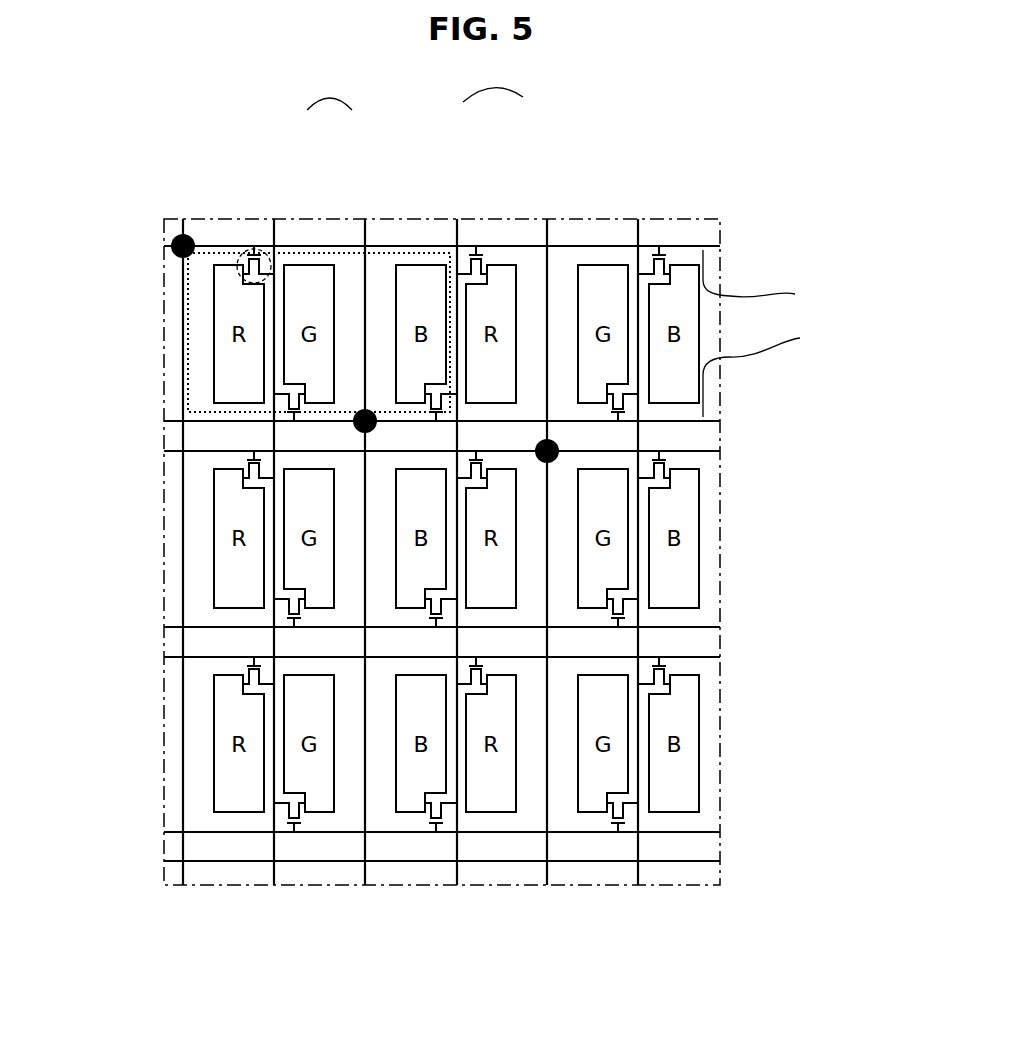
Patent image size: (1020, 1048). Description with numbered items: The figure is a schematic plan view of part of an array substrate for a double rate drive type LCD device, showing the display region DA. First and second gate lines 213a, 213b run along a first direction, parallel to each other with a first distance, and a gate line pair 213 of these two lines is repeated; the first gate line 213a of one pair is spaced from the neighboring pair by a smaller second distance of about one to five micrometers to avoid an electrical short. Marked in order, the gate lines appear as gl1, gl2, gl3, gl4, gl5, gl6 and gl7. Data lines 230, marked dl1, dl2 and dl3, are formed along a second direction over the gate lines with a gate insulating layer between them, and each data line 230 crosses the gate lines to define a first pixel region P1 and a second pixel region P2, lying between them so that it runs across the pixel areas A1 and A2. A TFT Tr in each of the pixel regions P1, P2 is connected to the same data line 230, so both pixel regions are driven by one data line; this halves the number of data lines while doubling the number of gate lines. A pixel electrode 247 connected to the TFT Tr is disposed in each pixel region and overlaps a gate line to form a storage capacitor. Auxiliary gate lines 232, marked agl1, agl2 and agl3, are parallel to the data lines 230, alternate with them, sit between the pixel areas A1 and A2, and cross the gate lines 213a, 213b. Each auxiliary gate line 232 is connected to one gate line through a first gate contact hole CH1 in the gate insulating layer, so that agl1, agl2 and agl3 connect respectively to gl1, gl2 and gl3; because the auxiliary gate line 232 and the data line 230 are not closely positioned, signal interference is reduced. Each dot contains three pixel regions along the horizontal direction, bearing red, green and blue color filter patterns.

The display region DA is at (733, 262).
The element dot is at (188, 380).
The first gate line gl1 is at (150, 246).
The second gate line gl2 is at (150, 421).
The third gate line gl3 is at (150, 451).
The fourth gate line gl4 is at (150, 627).
The fifth gate line gl5 is at (150, 657).
The sixth gate line gl6 is at (150, 832).
The seventh gate line gl7 is at (150, 861).
The auxiliary gate line 232 is at (371, 556).
The first auxiliary gate line agl1 is at (183, 905).
The second auxiliary gate line agl2 is at (365, 905).
The third auxiliary gate line agl3 is at (547, 905).
The data line 230 is at (486, 559).
The first data line dl1 is at (274, 905).
The second data line dl2 is at (457, 905).
The third data line dl3 is at (638, 905).
The first gate contact hole CH1 is at (163, 233).
The thin film transistor Tr is at (250, 248).
The pixel electrode 247 is at (183, 288).
The first pixel region P1 is at (275, 261).
The second pixel region P2 is at (348, 285).
The first pixel area A1 is at (329, 92).
The second pixel area A2 is at (493, 83).
The gate line pair 213 is at (803, 333).
The first gate line 213a is at (779, 371).
The second gate line 213b is at (778, 281).